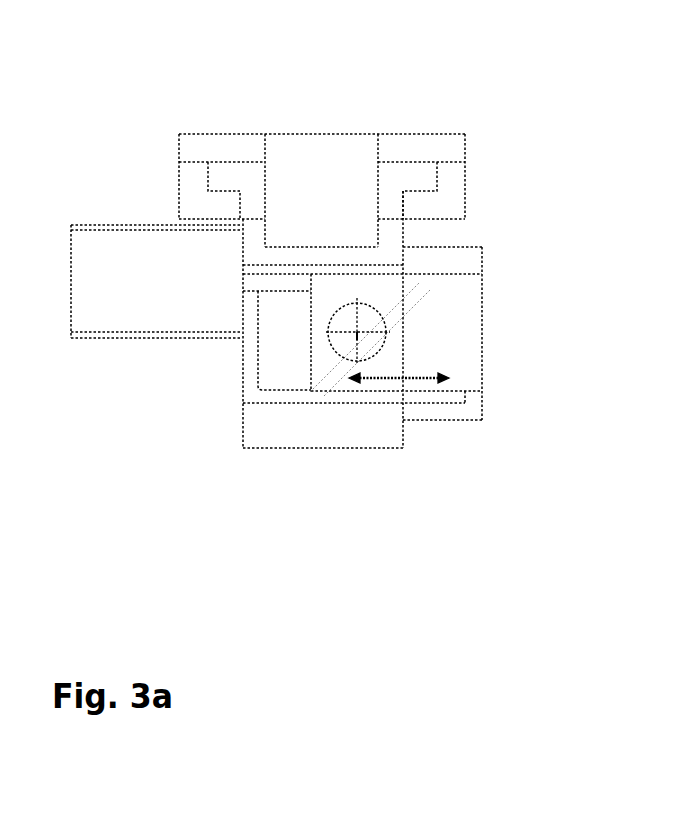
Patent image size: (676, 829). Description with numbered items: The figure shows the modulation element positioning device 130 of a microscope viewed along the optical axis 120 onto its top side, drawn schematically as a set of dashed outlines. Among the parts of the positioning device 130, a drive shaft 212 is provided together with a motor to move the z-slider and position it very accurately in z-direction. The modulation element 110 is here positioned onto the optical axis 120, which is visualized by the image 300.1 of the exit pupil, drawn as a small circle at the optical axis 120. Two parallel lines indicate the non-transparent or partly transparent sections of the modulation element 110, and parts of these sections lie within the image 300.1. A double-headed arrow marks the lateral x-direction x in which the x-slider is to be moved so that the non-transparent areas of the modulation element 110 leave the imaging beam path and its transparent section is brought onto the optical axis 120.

The modulation element positioning device 130 is at (527, 114).
The modulation element 110 is at (477, 299).
The drive shaft 212 is at (270, 303).
The image of the exit pupil 300.1 is at (392, 342).
The optical axis 120 is at (357, 332).
The x-direction x is at (387, 380).